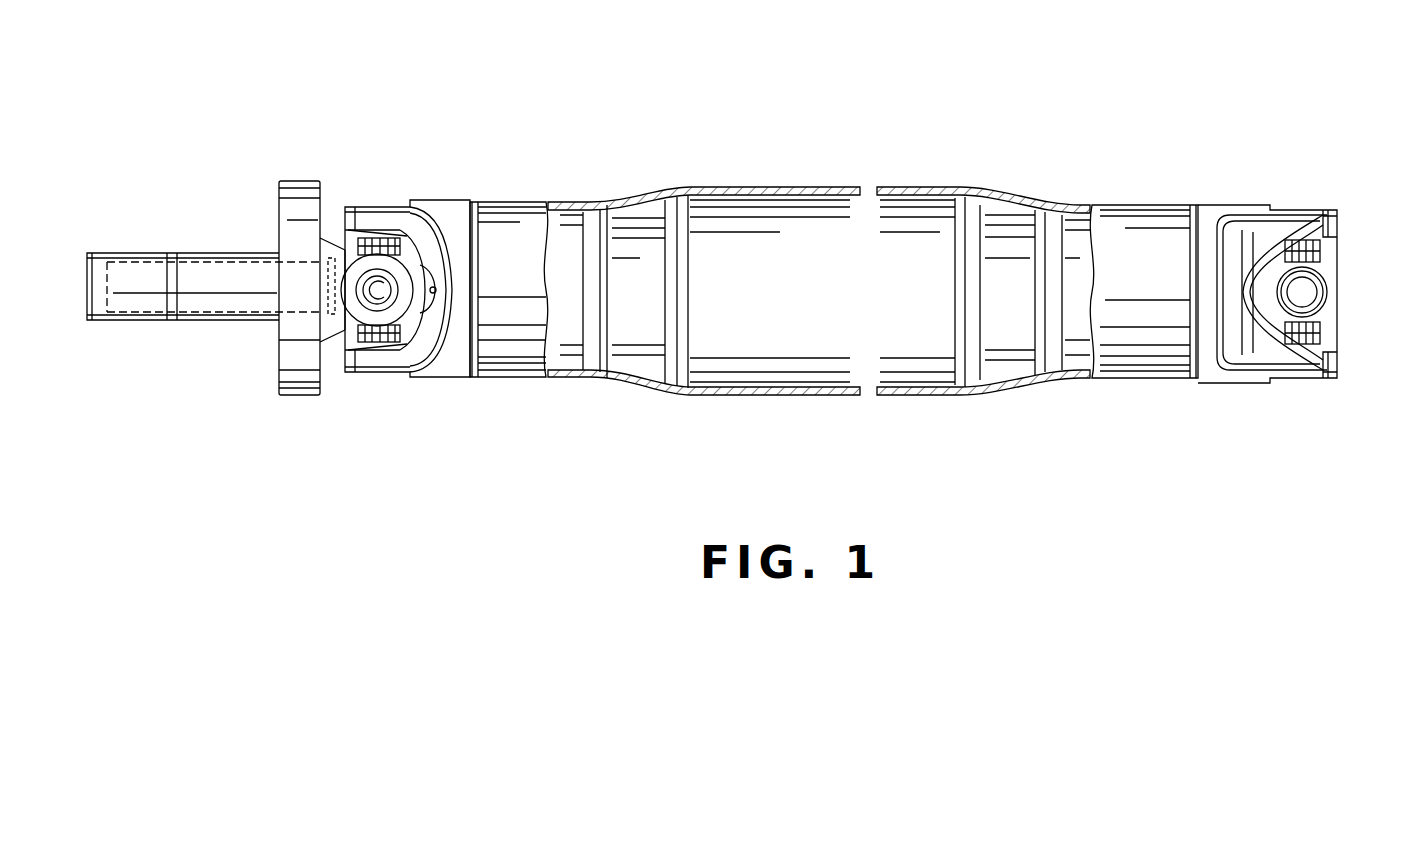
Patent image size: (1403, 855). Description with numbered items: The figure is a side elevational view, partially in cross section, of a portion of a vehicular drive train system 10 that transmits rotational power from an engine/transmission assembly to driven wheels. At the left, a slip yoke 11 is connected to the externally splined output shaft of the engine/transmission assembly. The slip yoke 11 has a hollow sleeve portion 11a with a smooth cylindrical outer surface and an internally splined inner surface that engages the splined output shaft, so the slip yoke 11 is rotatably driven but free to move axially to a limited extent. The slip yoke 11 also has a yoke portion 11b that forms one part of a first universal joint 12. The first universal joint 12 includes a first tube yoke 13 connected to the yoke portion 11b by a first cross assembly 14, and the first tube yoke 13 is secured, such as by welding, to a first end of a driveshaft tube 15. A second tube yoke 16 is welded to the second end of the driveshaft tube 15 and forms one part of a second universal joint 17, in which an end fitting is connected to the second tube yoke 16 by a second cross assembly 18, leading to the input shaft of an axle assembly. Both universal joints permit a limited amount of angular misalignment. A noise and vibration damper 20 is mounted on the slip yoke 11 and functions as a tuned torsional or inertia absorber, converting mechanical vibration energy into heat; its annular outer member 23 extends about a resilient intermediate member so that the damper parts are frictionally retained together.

The drive train system 10 is at (917, 105).
The slip yoke 11 is at (178, 218).
The hollow sleeve portion 11a is at (128, 305).
The yoke portion 11b is at (340, 262).
The first universal joint 12 is at (390, 397).
The first tube yoke 13 is at (450, 207).
The first cross assembly 14 is at (376, 257).
The driveshaft tube 15 is at (697, 188).
The second tube yoke 16 is at (1207, 207).
The second universal joint 17 is at (1295, 408).
The second cross assembly 18 is at (1307, 292).
The noise and vibration damper 20 is at (275, 410).
The outer member 23 is at (300, 385).